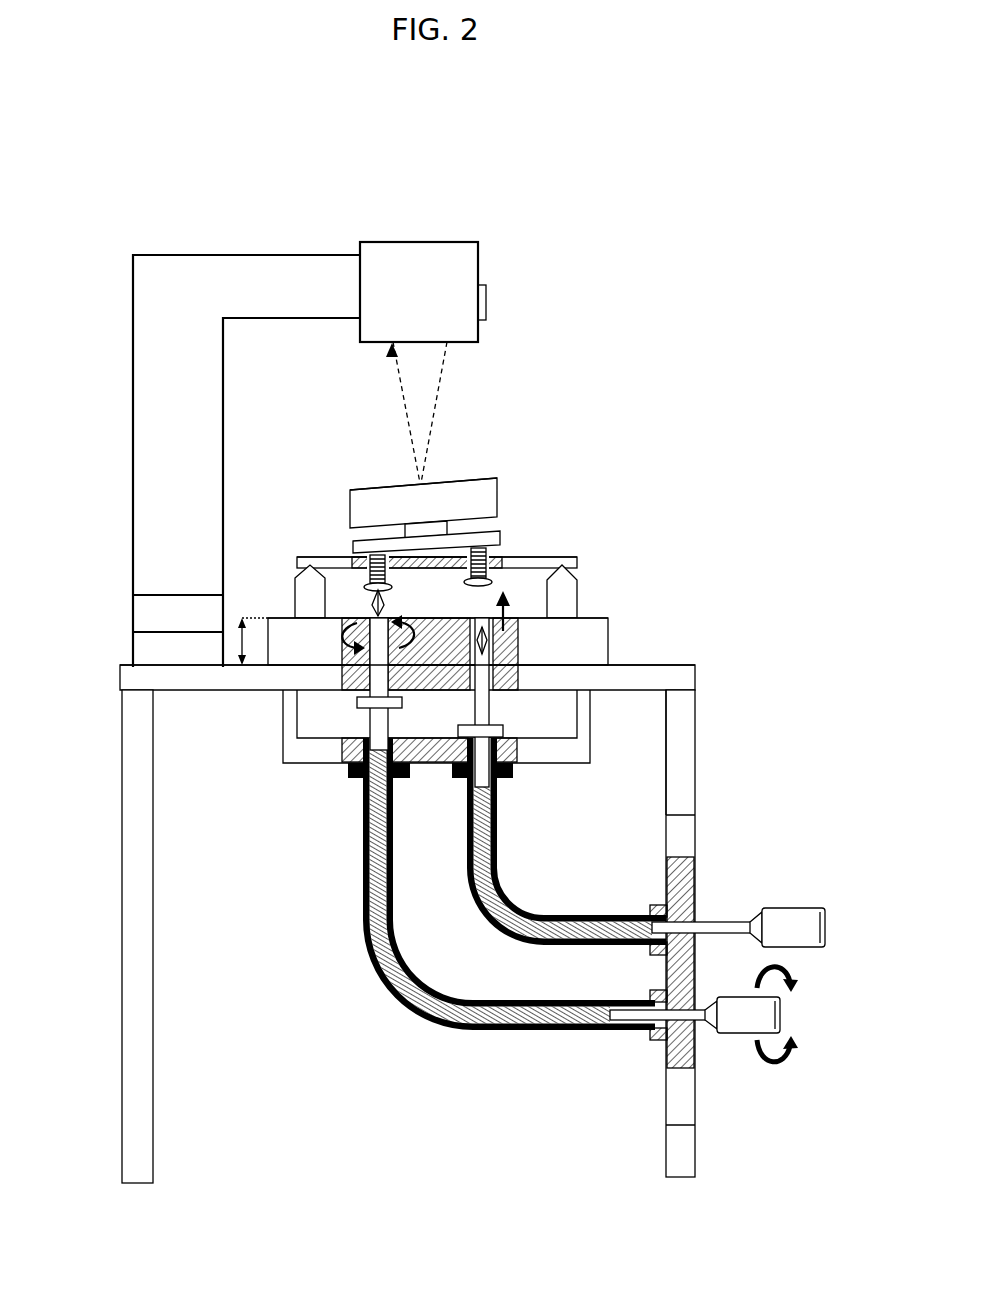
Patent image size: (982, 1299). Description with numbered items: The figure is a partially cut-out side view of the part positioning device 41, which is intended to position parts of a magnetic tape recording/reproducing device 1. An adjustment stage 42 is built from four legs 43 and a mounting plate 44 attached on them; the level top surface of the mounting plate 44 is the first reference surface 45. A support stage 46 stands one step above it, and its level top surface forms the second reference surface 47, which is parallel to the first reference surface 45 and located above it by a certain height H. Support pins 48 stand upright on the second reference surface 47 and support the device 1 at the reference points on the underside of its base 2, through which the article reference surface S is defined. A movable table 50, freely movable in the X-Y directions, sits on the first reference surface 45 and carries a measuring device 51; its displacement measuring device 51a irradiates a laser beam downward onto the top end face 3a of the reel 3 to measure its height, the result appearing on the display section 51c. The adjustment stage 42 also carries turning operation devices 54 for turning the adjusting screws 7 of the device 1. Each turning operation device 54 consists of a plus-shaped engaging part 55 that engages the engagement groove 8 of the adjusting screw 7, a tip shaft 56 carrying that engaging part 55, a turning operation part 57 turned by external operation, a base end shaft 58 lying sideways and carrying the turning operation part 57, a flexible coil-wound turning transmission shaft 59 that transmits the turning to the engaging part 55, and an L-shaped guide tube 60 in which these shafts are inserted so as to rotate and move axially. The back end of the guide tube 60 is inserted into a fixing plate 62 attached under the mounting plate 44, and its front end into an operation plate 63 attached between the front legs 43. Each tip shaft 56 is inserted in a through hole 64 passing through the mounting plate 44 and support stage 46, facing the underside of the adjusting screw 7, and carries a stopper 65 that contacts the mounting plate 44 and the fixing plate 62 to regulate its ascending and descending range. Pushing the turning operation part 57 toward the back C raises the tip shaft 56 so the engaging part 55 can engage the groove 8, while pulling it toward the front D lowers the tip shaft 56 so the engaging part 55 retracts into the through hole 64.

The magnetic tape recording/reproducing device 1 is at (555, 540).
The base 2 is at (566, 598).
The reel 3 is at (500, 477).
The top end face 3a is at (375, 485).
The adjusting screw 7 is at (365, 582).
The engagement groove 8 is at (372, 588).
The part positioning device 41 is at (732, 620).
The adjustment stage 42 is at (705, 670).
The legs 43 is at (130, 747).
The mounting plate 44 is at (175, 697).
The first reference surface 45 is at (678, 662).
The support stage 46 is at (600, 645).
The second reference surface 47 is at (602, 610).
The support pins 48 is at (300, 602).
The movable table 50 is at (170, 590).
The measuring device 51 is at (450, 231).
The displacement measuring device 51a is at (459, 270).
The display section 51c is at (486, 305).
The turning operation device 54 is at (525, 898).
The engaging part 55 is at (388, 598).
The tip shaft 56 is at (350, 740).
The turning operation part 57 is at (808, 928).
The base end shaft 58 is at (722, 930).
The turning transmission shaft 59 is at (548, 943).
The guide tube 60 is at (363, 880).
The fixing plate 62 is at (548, 763).
The operation plate 63 is at (680, 1110).
The through hole 64 is at (498, 612).
The stopper 65 is at (357, 703).
The height H is at (240, 648).
The article reference surface S is at (345, 592).
The front direction D is at (765, 847).
The back direction C is at (772, 885).